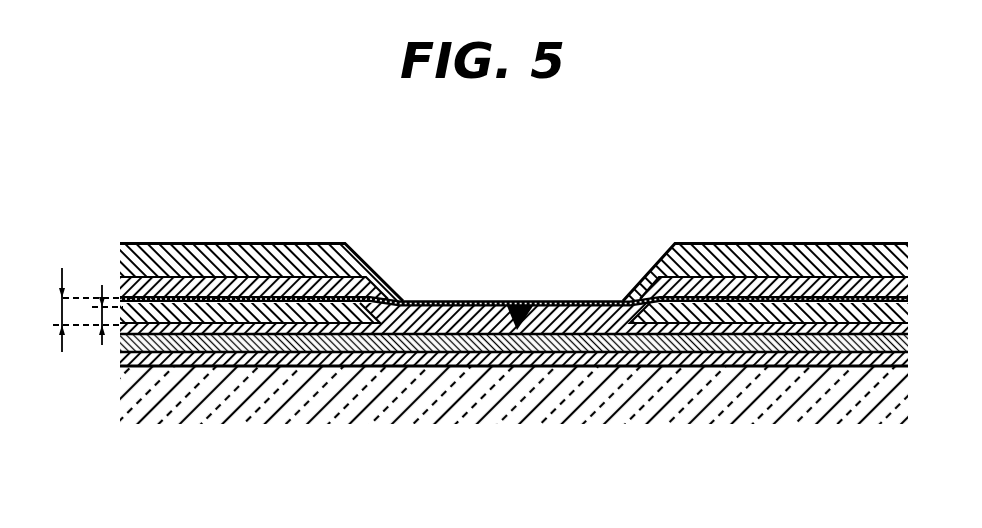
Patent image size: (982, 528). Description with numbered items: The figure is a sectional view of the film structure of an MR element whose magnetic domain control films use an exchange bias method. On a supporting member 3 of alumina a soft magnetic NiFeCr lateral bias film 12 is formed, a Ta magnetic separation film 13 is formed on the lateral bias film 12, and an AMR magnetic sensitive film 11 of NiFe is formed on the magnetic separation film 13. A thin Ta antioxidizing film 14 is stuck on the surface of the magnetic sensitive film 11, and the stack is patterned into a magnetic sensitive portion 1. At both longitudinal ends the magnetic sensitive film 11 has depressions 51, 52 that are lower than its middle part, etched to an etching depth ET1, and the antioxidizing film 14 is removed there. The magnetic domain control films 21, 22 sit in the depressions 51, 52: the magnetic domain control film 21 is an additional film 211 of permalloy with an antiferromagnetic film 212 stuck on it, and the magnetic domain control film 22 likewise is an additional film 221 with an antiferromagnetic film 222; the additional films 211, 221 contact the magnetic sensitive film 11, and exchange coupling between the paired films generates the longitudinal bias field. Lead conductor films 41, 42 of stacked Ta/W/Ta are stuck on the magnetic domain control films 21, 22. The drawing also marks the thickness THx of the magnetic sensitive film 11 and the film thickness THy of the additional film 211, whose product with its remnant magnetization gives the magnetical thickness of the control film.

The magnetic sensitive portion 1 is at (440, 292).
The supporting member 3 is at (622, 392).
The magnetic sensitive film 11 is at (389, 360).
The lateral bias film 12 is at (446, 343).
The magnetic separation film 13 is at (516, 320).
The antioxidizing film 14 is at (576, 300).
The magnetic domain control film 21 is at (162, 272).
The magnetic domain control film 22 is at (832, 268).
The additional film 211 is at (151, 368).
The antiferromagnetic film 212 is at (228, 368).
The additional film 221 is at (718, 316).
The antiferromagnetic film 222 is at (840, 304).
The lead conductor film 41 is at (218, 282).
The lead conductor film 42 is at (731, 285).
The depression 51 is at (282, 282).
The depression 52 is at (791, 315).
The film thickness of the magnetic sensitive film THx is at (512, 306).
The film thickness of the additional film THy is at (57, 297).
The etching depth ET1 is at (101, 342).